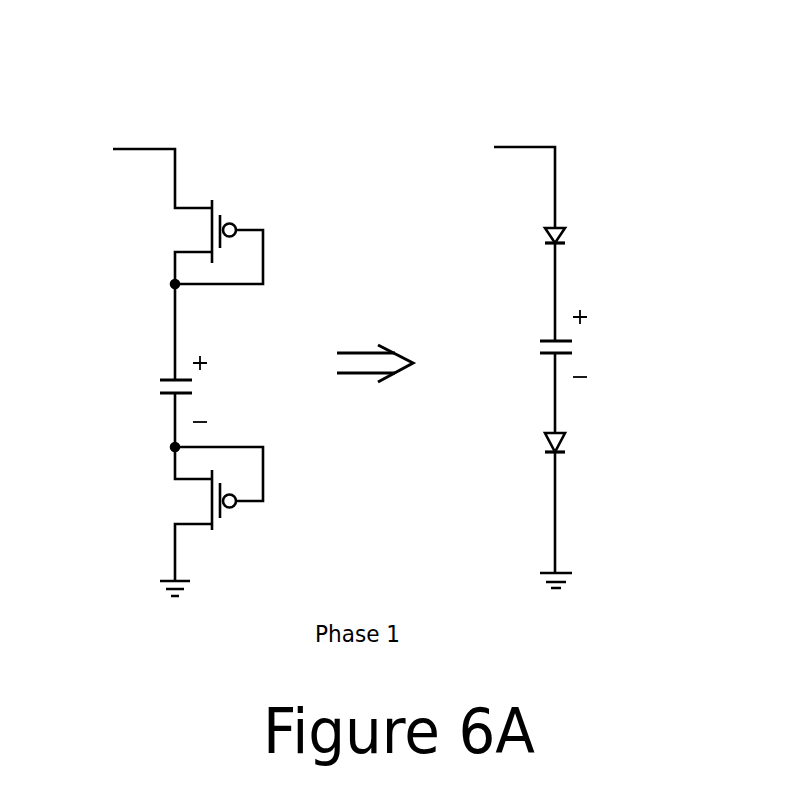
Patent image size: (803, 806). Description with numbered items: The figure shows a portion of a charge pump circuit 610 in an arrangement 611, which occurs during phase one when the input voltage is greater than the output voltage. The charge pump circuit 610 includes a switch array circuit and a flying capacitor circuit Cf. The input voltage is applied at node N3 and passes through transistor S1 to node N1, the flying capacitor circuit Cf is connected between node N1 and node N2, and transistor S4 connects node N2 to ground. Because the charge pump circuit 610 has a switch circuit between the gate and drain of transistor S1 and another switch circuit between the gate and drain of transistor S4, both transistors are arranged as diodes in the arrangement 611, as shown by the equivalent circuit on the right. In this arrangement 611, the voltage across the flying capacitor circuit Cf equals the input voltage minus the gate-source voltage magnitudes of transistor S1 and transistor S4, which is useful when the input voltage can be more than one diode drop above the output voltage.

The charge pump circuit 610 is at (372, 47).
The arrangement 611 is at (637, 186).
The transistor S1 is at (374, 242).
The transistor S4 is at (374, 481).
The flying capacitor circuit Cf is at (382, 366).
The first node N1 is at (175, 333).
The second node N2 is at (175, 428).
The third node (input node) N3 is at (155, 142).